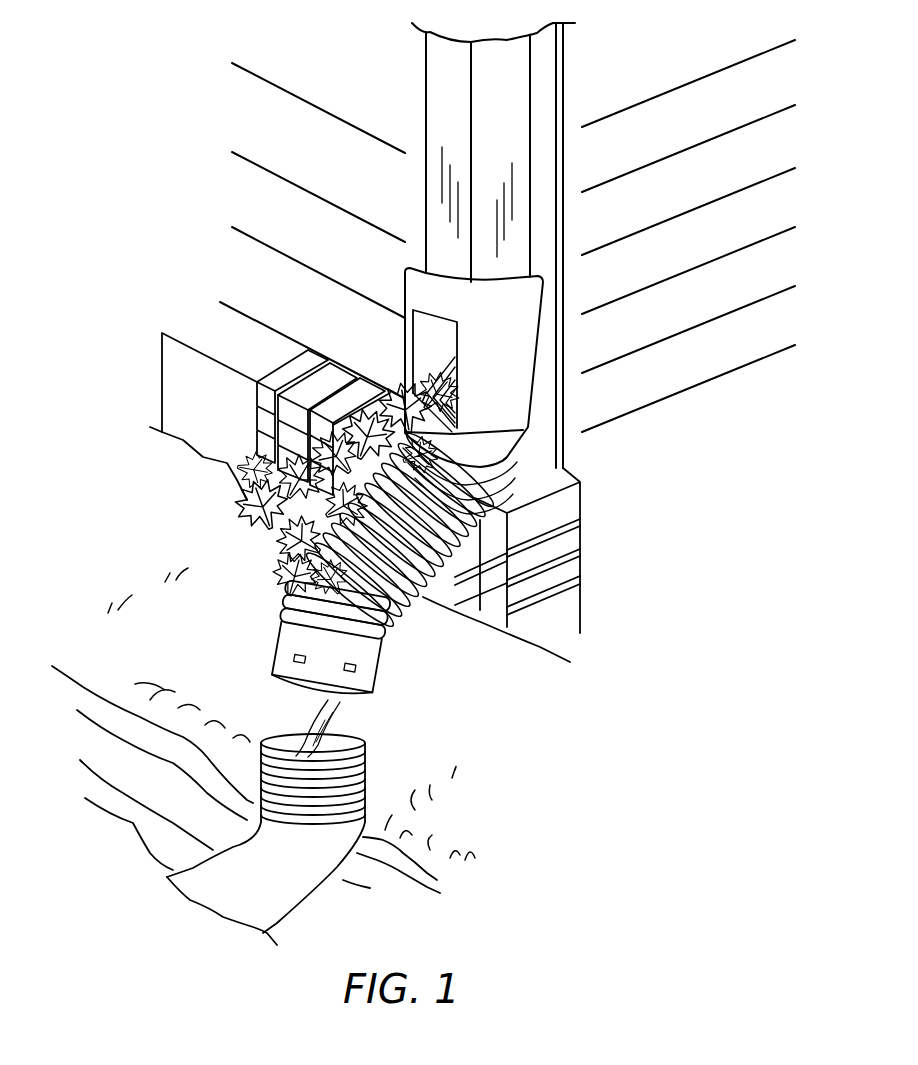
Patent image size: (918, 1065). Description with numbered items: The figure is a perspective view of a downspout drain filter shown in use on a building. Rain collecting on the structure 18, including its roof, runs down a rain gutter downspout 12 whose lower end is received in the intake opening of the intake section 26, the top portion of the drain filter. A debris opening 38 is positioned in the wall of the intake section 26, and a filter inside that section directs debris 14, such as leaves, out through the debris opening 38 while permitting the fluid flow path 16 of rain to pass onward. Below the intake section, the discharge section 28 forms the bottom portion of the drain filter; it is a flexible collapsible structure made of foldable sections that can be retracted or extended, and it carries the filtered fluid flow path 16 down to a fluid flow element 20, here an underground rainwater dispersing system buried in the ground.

The rain gutter downspout 12 is at (442, 118).
The debris 14 is at (243, 502).
The fluid flow path 16 is at (337, 710).
The structure 18 is at (212, 420).
The fluid flow element 20 is at (290, 878).
The intake section 26 is at (516, 299).
The discharge section 28 is at (416, 610).
The debris opening 38 is at (418, 355).